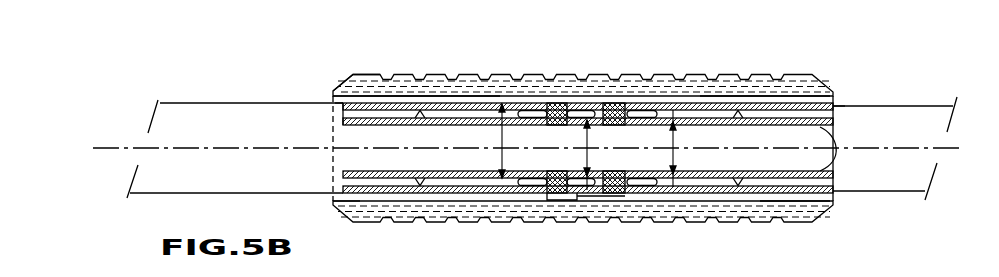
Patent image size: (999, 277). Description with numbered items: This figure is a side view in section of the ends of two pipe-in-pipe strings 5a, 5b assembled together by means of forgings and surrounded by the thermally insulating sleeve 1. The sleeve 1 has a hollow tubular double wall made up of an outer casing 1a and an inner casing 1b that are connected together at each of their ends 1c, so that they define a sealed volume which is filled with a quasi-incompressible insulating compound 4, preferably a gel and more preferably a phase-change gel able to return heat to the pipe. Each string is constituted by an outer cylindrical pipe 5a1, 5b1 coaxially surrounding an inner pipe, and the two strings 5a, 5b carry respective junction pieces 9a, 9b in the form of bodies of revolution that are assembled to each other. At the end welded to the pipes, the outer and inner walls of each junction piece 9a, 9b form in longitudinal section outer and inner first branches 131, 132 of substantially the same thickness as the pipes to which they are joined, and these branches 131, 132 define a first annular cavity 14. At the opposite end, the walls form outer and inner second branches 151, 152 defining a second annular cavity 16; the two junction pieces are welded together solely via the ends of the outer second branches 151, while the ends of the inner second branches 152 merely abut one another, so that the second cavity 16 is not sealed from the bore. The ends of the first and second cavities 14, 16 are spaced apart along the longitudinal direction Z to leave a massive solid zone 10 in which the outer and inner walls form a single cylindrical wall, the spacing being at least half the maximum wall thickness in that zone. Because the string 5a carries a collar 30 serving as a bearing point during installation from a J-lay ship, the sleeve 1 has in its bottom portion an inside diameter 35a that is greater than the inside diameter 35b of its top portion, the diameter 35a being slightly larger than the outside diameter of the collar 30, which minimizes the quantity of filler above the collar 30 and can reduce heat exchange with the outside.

The thermally insulating sleeve 1 is at (802, 68).
The outer casing 1a is at (368, 74).
The inner casing 1b is at (352, 97).
The ends of the casings 1c is at (343, 105).
The quasi-incompressible insulating compound 4 is at (797, 208).
The first string of PiP type pipe 5a is at (273, 101).
The outer cylindrical pipe of first string 5a1 is at (222, 109).
The second string of PiP type pipe 5b is at (887, 102).
The outer cylindrical pipe of second string 5b1 is at (864, 114).
The first junction piece 9a is at (557, 197).
The second junction piece 9b is at (597, 200).
The solid zone 10 is at (157, 73).
The outer first branch 131 is at (657, 115).
The inner first branch 132 is at (640, 128).
The first annular cavity 14 is at (515, 113).
The outer second branch 151 is at (580, 108).
The inner second branch 152 is at (582, 180).
The second annular cavity 16 is at (587, 148).
The collar 30 is at (551, 103).
The larger inside diameter portion of sleeve 35a is at (412, 96).
The smaller inside diameter portion of sleeve 35b is at (765, 97).
The longitudinal direction Z is at (527, 150).